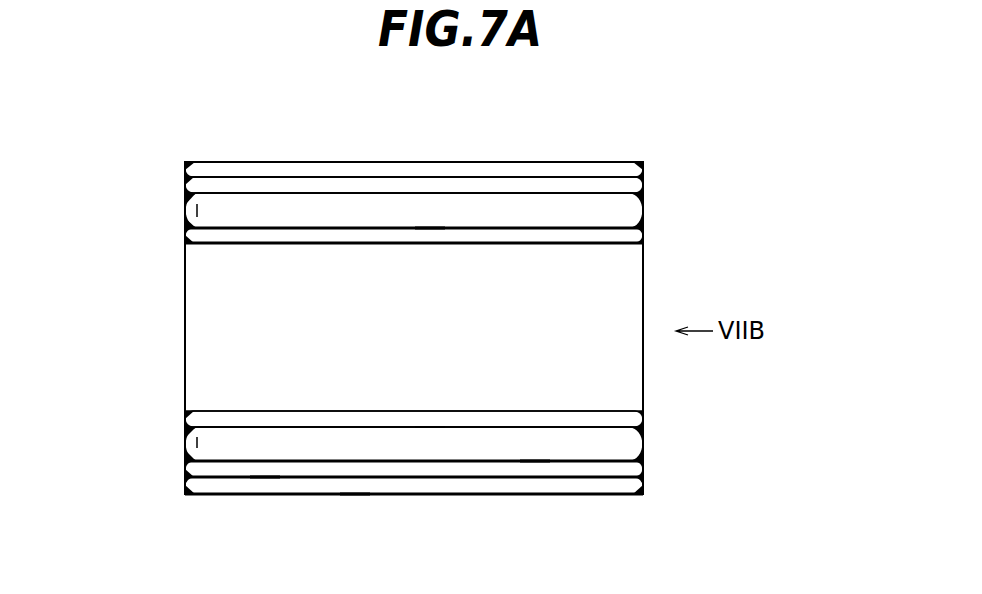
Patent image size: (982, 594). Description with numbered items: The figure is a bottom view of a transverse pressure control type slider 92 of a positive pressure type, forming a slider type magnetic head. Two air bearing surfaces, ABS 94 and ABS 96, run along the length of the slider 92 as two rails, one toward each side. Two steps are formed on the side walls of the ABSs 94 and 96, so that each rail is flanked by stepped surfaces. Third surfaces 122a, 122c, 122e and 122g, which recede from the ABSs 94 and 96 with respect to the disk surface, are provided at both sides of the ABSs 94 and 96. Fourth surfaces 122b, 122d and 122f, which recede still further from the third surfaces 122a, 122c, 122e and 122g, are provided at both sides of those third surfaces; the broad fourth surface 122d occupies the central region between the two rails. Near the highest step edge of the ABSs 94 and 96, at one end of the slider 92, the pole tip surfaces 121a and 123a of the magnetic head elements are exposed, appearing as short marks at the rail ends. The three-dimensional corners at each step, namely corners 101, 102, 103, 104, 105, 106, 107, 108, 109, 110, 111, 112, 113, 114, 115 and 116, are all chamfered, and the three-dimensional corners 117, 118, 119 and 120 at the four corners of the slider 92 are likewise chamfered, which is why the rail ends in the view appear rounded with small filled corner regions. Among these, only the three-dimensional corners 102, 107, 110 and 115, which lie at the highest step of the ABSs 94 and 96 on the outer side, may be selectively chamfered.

The slider 92 is at (800, 133).
The air bearing surface (ABS) 94 is at (533, 199).
The air bearing surface (ABS) 96 is at (531, 456).
The three-dimensional corner 101 is at (643, 178).
The three-dimensional corner 102 is at (643, 194).
The three-dimensional corner 103 is at (643, 228).
The three-dimensional corner 104 is at (643, 243).
The three-dimensional corner 105 is at (643, 411).
The three-dimensional corner 106 is at (643, 427).
The three-dimensional corner 107 is at (643, 461).
The three-dimensional corner 108 is at (643, 477).
The three-dimensional corner 109 is at (186, 178).
The three-dimensional corner 110 is at (186, 194).
The three-dimensional corner 111 is at (186, 227).
The three-dimensional corner 112 is at (186, 243).
The three-dimensional corner 113 is at (186, 411).
The three-dimensional corner 114 is at (186, 428).
The three-dimensional corner 115 is at (186, 461).
The three-dimensional corner 116 is at (186, 477).
The three-dimensional corner 117 is at (643, 163).
The three-dimensional corner 118 is at (643, 494).
The three-dimensional corner 119 is at (186, 163).
The three-dimensional corner 120 is at (186, 494).
The pole tip surface 121a is at (195, 210).
The third surface 122a is at (265, 187).
The fourth surface 122b is at (356, 172).
The third surface 122c is at (429, 235).
The fourth surface 122d is at (205, 332).
The third surface 122e is at (263, 468).
The fourth surface 122f is at (357, 484).
The third surface 122g is at (429, 417).
The pole tip surface 123a is at (195, 442).